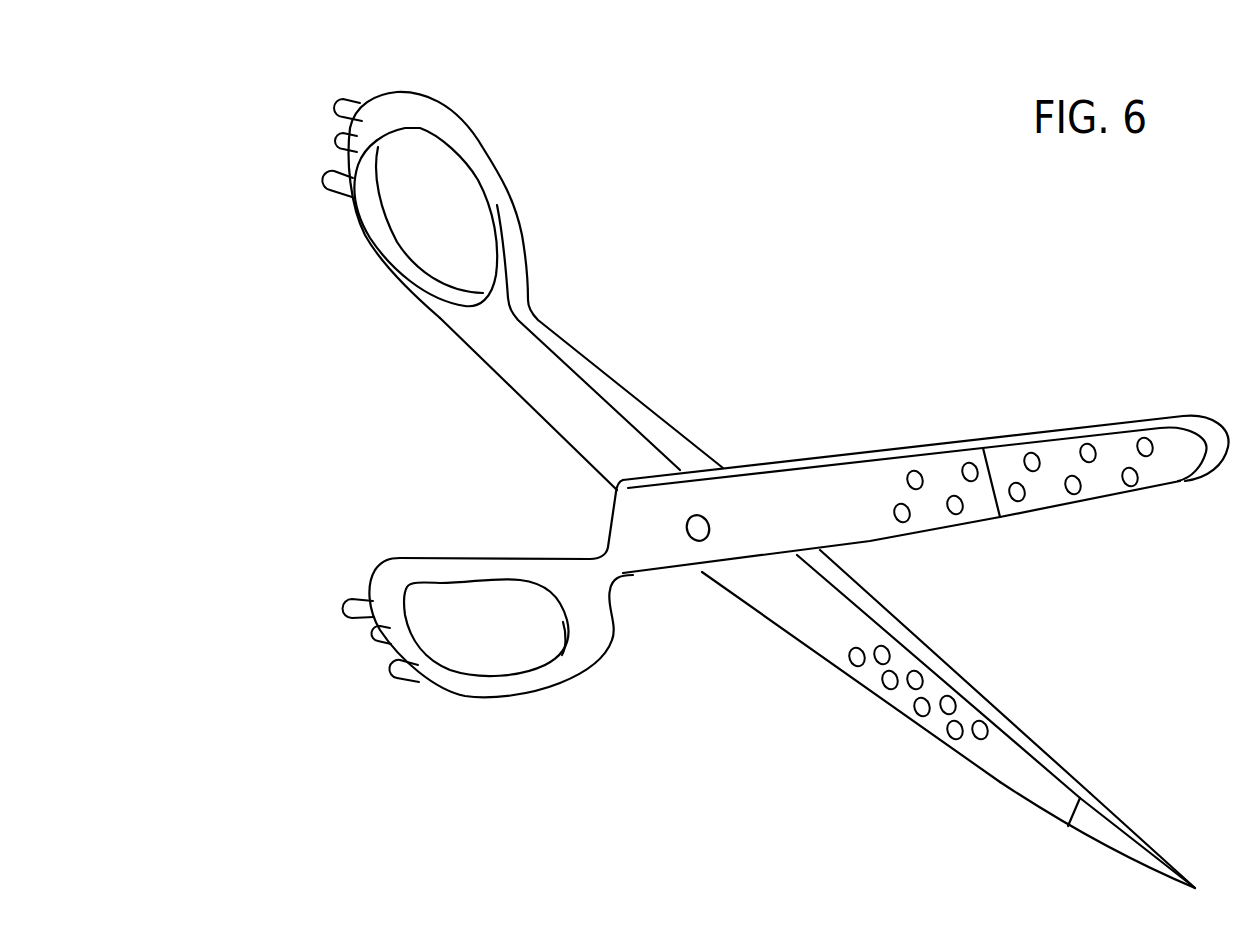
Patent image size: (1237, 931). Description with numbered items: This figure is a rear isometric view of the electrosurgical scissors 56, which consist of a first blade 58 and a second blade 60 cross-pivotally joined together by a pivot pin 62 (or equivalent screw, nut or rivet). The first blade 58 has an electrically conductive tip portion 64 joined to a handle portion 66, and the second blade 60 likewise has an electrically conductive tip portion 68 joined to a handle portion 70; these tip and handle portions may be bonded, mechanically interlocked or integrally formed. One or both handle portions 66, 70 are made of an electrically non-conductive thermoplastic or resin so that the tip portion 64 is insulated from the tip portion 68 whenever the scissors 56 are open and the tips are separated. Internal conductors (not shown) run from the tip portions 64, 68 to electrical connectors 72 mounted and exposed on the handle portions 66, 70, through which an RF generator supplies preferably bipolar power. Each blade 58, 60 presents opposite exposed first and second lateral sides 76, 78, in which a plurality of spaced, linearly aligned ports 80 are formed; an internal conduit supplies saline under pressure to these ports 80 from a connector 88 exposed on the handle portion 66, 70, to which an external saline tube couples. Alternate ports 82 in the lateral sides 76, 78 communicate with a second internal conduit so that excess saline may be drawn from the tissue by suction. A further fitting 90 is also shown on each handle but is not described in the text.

The electrosurgical scissors 56 is at (772, 304).
The first blade 58 is at (985, 697).
The second blade 60 is at (810, 470).
The pivot pin 62 is at (698, 528).
The tip portion 64 is at (1133, 833).
The handle portion 66 is at (600, 385).
The tip portion 68 is at (1183, 427).
The handle portion 70 is at (612, 526).
The electrical connector 72 is at (341, 145).
The first lateral side 76 is at (938, 518).
The second lateral side 78 is at (790, 622).
The ports 80 is at (957, 512).
The ports 82 is at (1080, 470).
The connector 88 is at (330, 180).
The upper protrusion on handle ring 90 is at (345, 106).